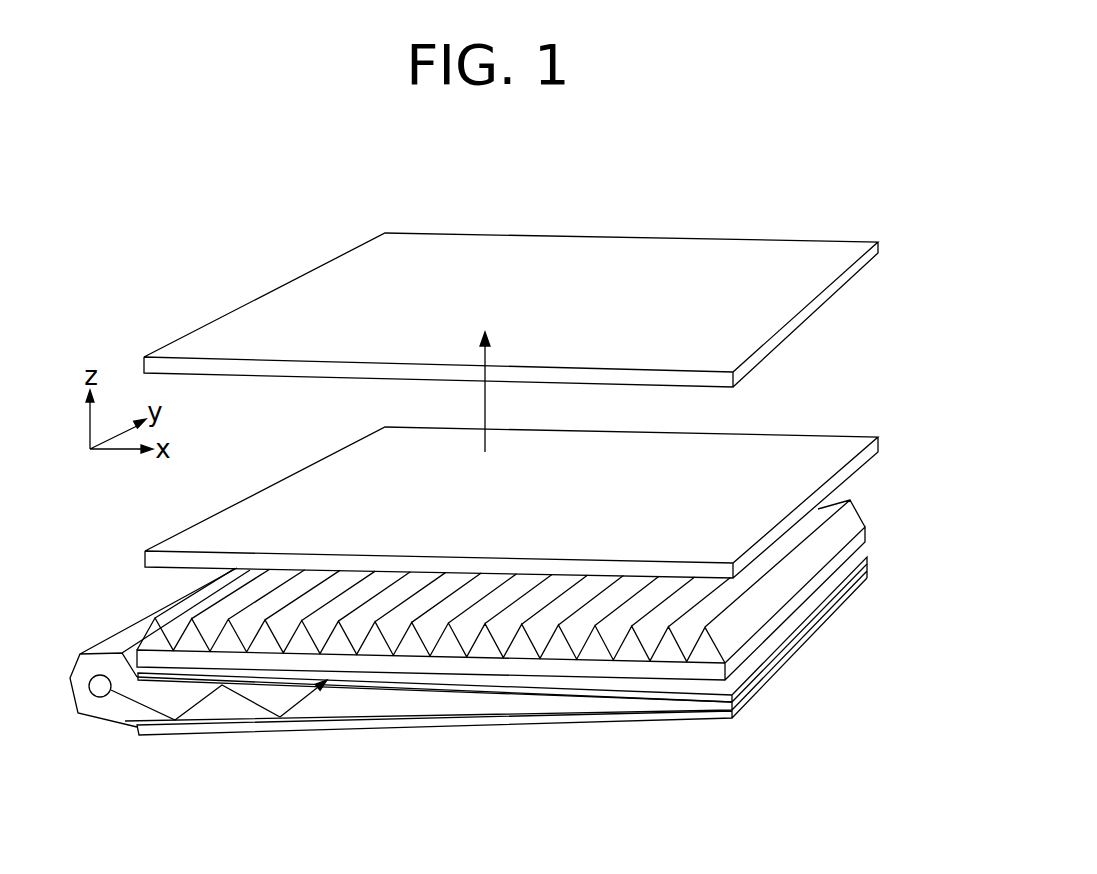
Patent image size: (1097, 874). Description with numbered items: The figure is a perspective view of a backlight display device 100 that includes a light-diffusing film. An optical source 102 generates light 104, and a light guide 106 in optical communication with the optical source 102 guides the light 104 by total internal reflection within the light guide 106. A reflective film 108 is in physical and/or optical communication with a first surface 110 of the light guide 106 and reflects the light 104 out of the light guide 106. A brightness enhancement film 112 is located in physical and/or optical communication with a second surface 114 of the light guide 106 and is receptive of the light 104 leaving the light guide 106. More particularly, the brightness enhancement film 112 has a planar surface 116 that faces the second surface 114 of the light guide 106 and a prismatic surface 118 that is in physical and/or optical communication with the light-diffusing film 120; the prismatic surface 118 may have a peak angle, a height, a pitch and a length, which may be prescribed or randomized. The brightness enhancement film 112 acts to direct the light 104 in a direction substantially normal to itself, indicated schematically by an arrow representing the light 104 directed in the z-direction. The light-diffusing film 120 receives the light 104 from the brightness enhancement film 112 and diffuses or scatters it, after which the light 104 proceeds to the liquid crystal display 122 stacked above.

The backlight display device 100 is at (317, 222).
The liquid crystal display 122 is at (722, 248).
The light-diffusing film 120 is at (818, 441).
The light 104 is at (488, 406).
The brightness enhancement film 112 is at (868, 492).
The prismatic surface 118 is at (707, 648).
The planar surface 116 is at (670, 681).
The first surface 110 is at (583, 706).
The reflective film 108 is at (462, 731).
The second surface 114 is at (128, 700).
The optical source 102 is at (100, 674).
The light guide 106 is at (218, 701).